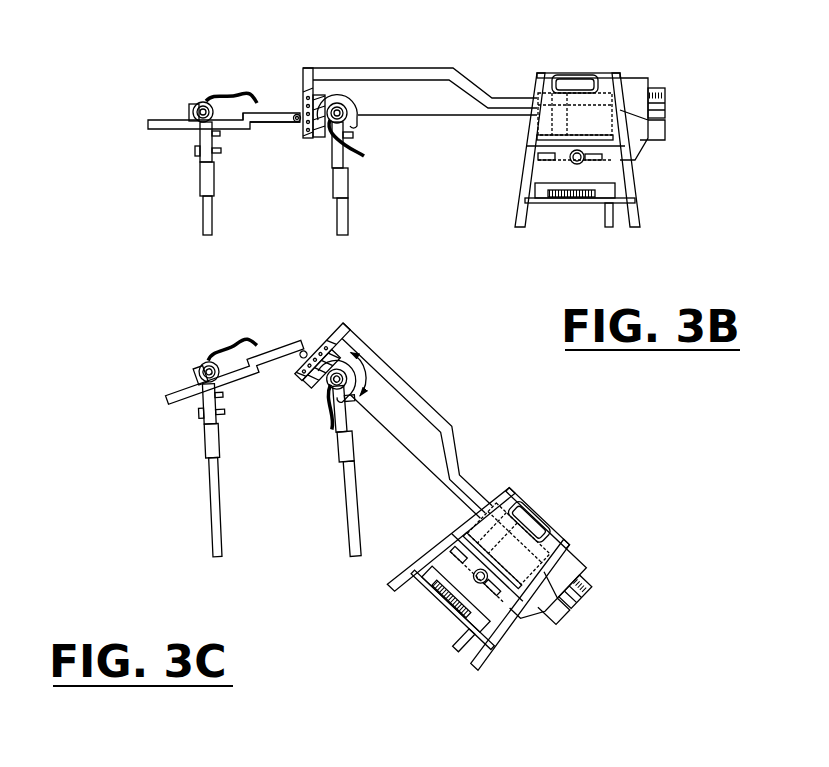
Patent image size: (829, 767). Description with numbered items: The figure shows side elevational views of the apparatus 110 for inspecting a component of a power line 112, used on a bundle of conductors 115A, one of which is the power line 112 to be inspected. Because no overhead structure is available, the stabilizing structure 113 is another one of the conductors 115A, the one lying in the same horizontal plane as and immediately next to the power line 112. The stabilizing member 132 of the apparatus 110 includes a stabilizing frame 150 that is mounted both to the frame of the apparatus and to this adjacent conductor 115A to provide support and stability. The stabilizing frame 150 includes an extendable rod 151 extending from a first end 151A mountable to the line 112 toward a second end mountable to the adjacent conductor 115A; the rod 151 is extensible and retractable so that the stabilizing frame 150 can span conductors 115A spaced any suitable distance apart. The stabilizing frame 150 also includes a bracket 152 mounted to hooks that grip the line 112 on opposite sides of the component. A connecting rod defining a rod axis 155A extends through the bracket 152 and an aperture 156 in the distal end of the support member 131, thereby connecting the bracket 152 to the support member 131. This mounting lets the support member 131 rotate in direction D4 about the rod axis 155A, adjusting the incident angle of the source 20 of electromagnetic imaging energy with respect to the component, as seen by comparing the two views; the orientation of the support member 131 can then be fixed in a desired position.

In FIG. 3B, the stabilizing structure 113 is at (201, 97).
In FIG. 3B, the conductor 115A is at (184, 65).
In FIG. 3B, the extendable rod 151 is at (160, 130).
In FIG. 3B, the stabilizing member 132 is at (244, 145).
In FIG. 3B, the first end 151A is at (304, 142).
In FIG. 3B, the rod axis 155A is at (294, 115).
In FIG. 3B, the aperture 156 is at (298, 123).
In FIG. 3B, the bracket 152 is at (299, 88).
In FIG. 3C, the bracket 152 is at (313, 332).
In FIG. 3B, the support member 131 is at (393, 68).
In FIG. 3C, the support member 131 is at (398, 374).
In FIG. 3B, the source 20 is at (590, 118).
In FIG. 3C, the source 20 is at (520, 550).
In FIG. 3B, the apparatus 110 is at (484, 126).
In FIG. 3C, the apparatus 110 is at (456, 505).
In FIG. 3B, the power line 112 is at (350, 122).
In FIG. 3C, the stabilizing frame 150 is at (256, 333).
In FIG. 3C, the direction D4 is at (368, 392).